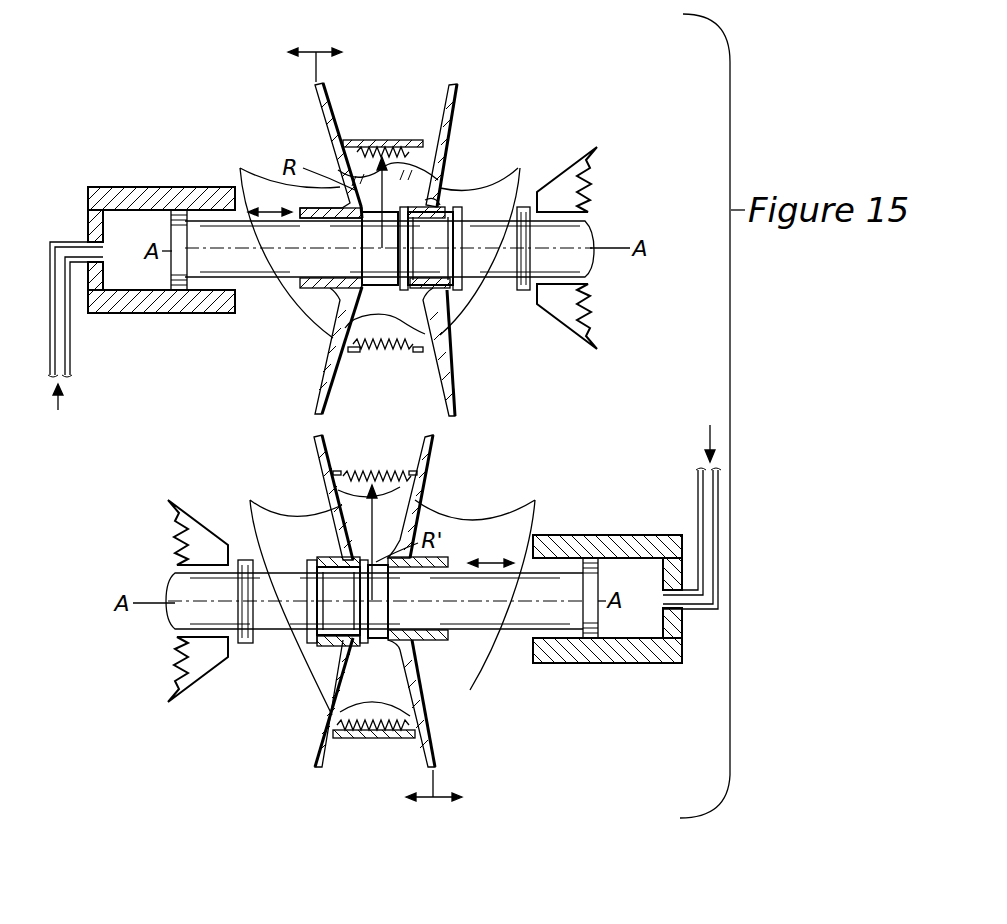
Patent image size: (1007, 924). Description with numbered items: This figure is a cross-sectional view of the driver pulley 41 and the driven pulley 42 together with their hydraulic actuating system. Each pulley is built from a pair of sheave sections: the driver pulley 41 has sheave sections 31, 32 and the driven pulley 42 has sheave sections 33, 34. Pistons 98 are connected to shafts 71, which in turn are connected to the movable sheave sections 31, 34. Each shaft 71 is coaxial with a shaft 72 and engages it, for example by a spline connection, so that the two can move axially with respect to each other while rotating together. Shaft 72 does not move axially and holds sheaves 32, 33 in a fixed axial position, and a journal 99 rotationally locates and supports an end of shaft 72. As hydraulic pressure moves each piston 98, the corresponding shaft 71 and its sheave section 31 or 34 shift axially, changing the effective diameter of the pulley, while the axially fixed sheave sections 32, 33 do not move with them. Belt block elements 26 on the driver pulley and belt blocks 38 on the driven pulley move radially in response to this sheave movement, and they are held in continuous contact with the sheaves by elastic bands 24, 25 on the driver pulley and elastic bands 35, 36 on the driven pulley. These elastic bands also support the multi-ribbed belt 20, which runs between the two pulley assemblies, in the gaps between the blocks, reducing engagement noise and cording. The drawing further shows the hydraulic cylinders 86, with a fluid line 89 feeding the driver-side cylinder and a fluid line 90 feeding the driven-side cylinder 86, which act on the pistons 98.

The multi-ribbed belt 20 is at (360, 140).
The elastic band 24 is at (281, 240).
The elastic band 25 is at (486, 239).
The belt block element 26 is at (432, 175).
The sheave section 31 is at (325, 120).
The sheave section 32 is at (455, 110).
The sheave section 33 is at (337, 512).
The sheave section 34 is at (415, 500).
The elastic band 35 is at (287, 595).
The elastic band 36 is at (482, 586).
The belt block 38 is at (353, 476).
The driver pulley 41 is at (462, 71).
The driven pulley 42 is at (456, 464).
The shaft 71 is at (269, 283).
The shaft 72 is at (498, 280).
The cylinder 86 is at (162, 316).
The fluid line 89 is at (55, 240).
The fluid line 90 is at (708, 612).
The piston 98 is at (170, 233).
The journal 99 is at (590, 268).